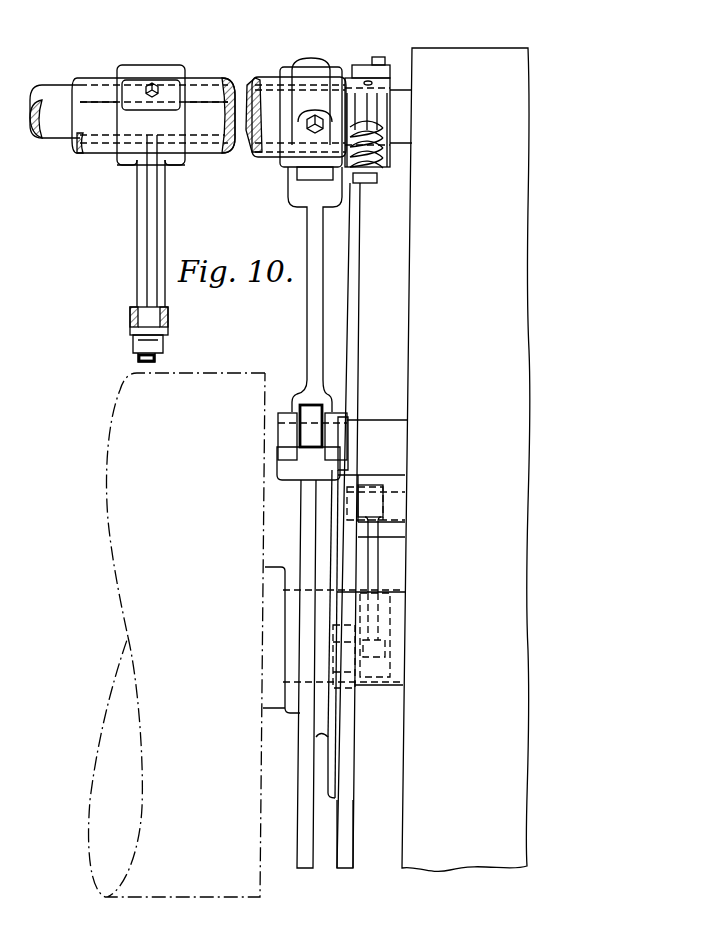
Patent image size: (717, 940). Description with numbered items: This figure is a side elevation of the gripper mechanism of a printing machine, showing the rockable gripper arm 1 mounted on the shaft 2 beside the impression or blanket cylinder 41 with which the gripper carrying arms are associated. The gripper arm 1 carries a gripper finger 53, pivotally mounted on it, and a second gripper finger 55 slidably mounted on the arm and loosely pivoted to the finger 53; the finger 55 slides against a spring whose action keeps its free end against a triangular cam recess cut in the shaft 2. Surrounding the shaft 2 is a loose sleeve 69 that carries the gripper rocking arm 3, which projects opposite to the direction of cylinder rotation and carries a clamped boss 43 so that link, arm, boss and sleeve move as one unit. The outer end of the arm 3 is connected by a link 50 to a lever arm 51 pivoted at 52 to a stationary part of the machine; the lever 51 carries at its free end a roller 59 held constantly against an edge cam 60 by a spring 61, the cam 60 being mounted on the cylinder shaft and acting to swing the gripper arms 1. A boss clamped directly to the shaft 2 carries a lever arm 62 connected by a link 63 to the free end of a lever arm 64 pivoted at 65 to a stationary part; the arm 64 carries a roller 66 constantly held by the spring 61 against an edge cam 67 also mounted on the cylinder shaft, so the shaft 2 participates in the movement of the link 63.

The sleeve 69 is at (103, 78).
The shaft 2 is at (252, 107).
The bracket 43 is at (287, 73).
The lever arm 62 is at (373, 75).
The spring 61 is at (387, 158).
The link 63 is at (358, 217).
The gripper rocking arm 3 is at (318, 172).
The rockable gripper arm 1 is at (143, 211).
The gripper finger 53 is at (137, 327).
The gripper finger 55 is at (153, 357).
The link 50 is at (313, 328).
The roller 59 is at (313, 410).
The lever arm 51 is at (337, 425).
The pivot 52 is at (297, 440).
The impression or blanket cylinder 41 is at (177, 635).
The edge cam 60 is at (312, 533).
The pivot 65 is at (390, 507).
The lever arm 64 is at (372, 562).
The roller 66 is at (343, 677).
The edge cam 67 is at (342, 813).